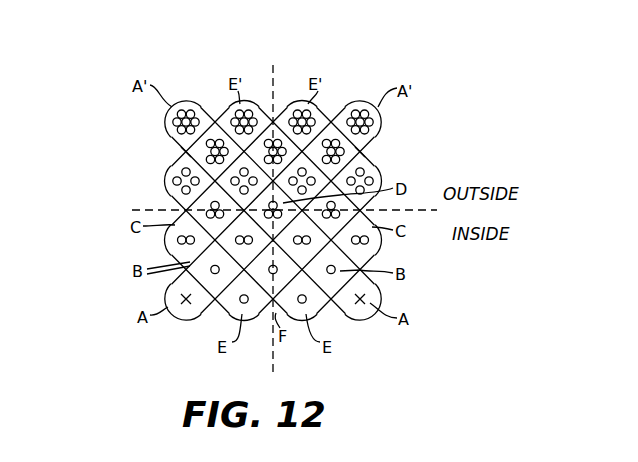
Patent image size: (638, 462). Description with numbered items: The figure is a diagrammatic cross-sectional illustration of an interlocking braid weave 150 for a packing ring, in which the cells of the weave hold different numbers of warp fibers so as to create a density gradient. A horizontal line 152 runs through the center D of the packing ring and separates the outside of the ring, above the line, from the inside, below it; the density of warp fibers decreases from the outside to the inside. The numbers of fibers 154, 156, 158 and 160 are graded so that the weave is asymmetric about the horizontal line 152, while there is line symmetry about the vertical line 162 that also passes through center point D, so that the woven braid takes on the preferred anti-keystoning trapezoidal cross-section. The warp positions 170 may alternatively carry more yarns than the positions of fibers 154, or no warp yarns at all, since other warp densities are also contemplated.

The interlocking braid weave 150 is at (305, 186).
The horizontal line 152 is at (132, 207).
The fibers 154 is at (182, 104).
The fibers 156 is at (167, 185).
The fibers 158 is at (167, 243).
The fibers 160 is at (165, 288).
The vertical line 162 is at (273, 66).
The warp positions 170 is at (185, 152).